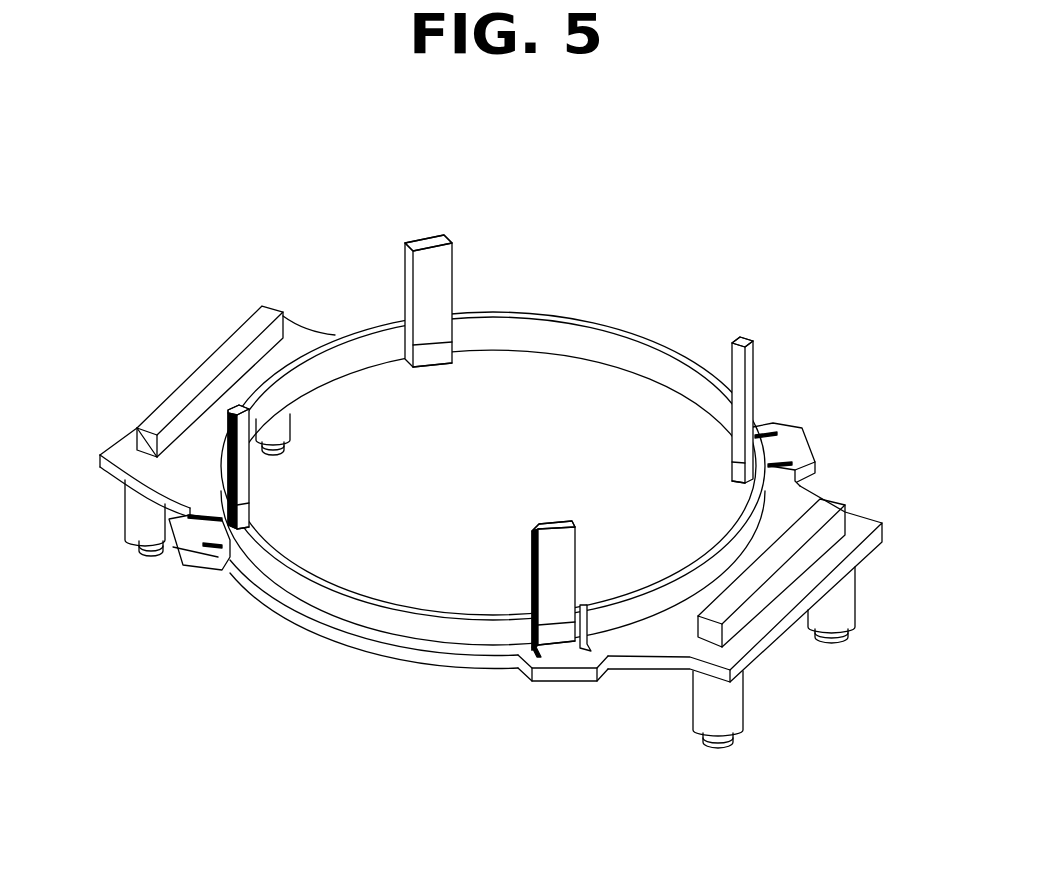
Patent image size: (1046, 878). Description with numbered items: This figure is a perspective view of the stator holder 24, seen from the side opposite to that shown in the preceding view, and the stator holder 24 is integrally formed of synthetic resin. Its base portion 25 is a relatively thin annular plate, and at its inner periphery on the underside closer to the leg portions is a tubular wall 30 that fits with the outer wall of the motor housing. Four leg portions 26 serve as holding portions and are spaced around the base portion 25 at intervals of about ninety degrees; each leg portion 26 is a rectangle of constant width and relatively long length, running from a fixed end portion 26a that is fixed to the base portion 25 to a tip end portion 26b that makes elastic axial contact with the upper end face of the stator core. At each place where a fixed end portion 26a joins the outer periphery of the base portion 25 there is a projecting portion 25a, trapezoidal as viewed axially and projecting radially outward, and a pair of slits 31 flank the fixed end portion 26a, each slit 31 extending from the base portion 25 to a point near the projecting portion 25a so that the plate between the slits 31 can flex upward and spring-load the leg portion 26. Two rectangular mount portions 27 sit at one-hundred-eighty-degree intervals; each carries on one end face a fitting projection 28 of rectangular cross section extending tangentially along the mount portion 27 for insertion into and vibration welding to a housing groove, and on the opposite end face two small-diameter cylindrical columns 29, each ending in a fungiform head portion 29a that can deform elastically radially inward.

The stator holder 24 is at (628, 322).
The base portion 25 is at (362, 652).
The projecting portion 25a is at (184, 553).
The leg portion 26 is at (434, 292).
The fixed end portion 26a is at (437, 362).
The tip end portion 26b is at (440, 237).
The mount portion 27 is at (114, 454).
The fitting projection 28 is at (218, 358).
The column 29 is at (135, 512).
The fungiform head portion 29a is at (144, 553).
The tubular wall 30 is at (583, 335).
The slit 31 is at (138, 431).